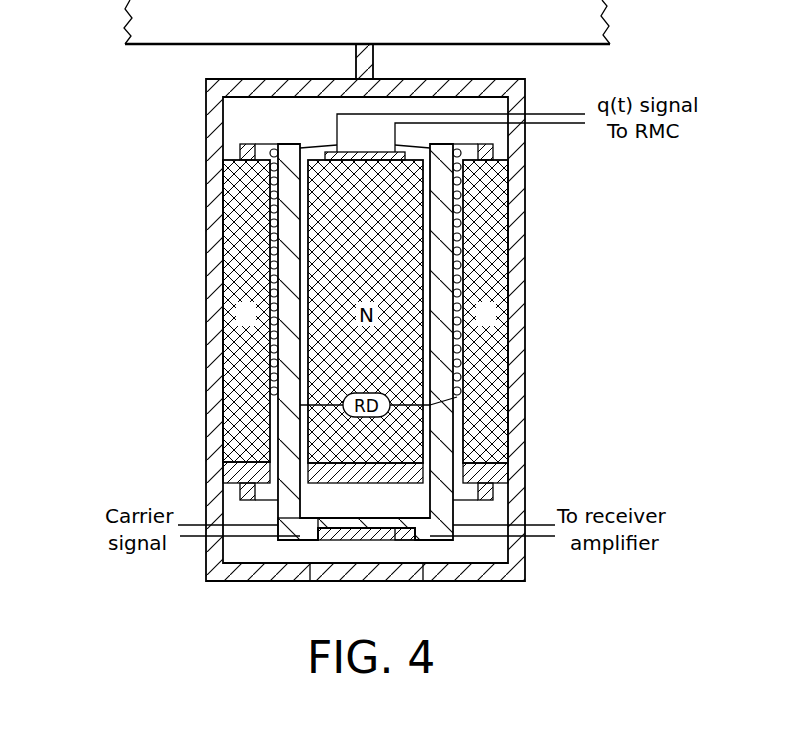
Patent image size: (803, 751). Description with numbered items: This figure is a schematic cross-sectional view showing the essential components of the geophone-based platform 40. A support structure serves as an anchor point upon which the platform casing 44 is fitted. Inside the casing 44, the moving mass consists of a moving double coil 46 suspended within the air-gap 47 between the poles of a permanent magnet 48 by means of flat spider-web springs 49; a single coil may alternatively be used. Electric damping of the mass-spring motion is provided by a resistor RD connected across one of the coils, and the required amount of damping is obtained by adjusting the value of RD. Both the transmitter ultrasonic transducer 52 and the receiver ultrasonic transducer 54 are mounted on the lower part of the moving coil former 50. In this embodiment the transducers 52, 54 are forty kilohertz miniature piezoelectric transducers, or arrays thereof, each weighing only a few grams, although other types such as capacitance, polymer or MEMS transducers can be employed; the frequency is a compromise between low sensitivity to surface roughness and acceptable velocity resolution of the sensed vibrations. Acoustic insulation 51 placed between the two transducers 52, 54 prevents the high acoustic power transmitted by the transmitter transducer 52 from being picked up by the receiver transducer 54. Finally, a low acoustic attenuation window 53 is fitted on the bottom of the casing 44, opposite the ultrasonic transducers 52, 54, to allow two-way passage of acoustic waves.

The geophone-based platform 40 is at (92, 88).
The platform casing 44 is at (206, 222).
The moving double coil 46 is at (270, 342).
The air-gap 47 is at (275, 431).
The permanent magnet 48 is at (493, 341).
The flat spider-web springs 49 is at (252, 158).
The moving coil former 50 is at (443, 502).
The acoustic insulation 51 is at (362, 545).
The transmitter ultrasonic transducer 52 is at (318, 545).
The low acoustic attenuation window 53 is at (415, 582).
The receiver ultrasonic transducer 54 is at (405, 545).